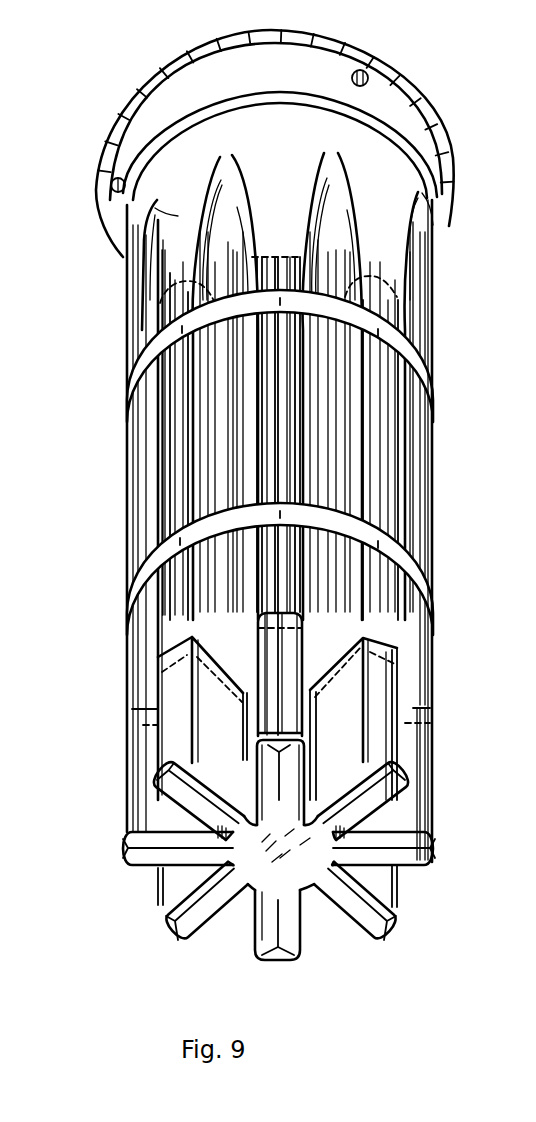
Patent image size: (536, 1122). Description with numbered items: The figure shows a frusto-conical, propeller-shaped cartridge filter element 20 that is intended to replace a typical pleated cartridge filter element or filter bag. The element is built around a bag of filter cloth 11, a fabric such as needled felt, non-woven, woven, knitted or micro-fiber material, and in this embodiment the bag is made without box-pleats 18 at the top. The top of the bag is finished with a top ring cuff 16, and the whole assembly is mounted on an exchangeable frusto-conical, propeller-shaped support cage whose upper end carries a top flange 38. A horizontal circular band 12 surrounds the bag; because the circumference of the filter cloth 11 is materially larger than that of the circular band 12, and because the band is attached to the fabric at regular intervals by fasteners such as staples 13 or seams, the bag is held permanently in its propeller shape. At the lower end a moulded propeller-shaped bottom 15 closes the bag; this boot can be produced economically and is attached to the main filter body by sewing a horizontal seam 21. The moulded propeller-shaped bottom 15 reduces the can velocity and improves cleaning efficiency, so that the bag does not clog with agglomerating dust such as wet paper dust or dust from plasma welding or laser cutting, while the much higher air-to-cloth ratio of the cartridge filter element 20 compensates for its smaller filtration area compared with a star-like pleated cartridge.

The top flange 38 is at (420, 82).
The top ring cuff 16 is at (423, 174).
The box-pleats 18 is at (156, 210).
The horizontal seam 21 is at (410, 318).
The circular band 12 is at (407, 357).
The cartridge filter element 20 is at (98, 456).
The staples 13 is at (380, 550).
The filter cloth 11 is at (418, 653).
The moulded propeller-shaped bottom 15 is at (275, 855).